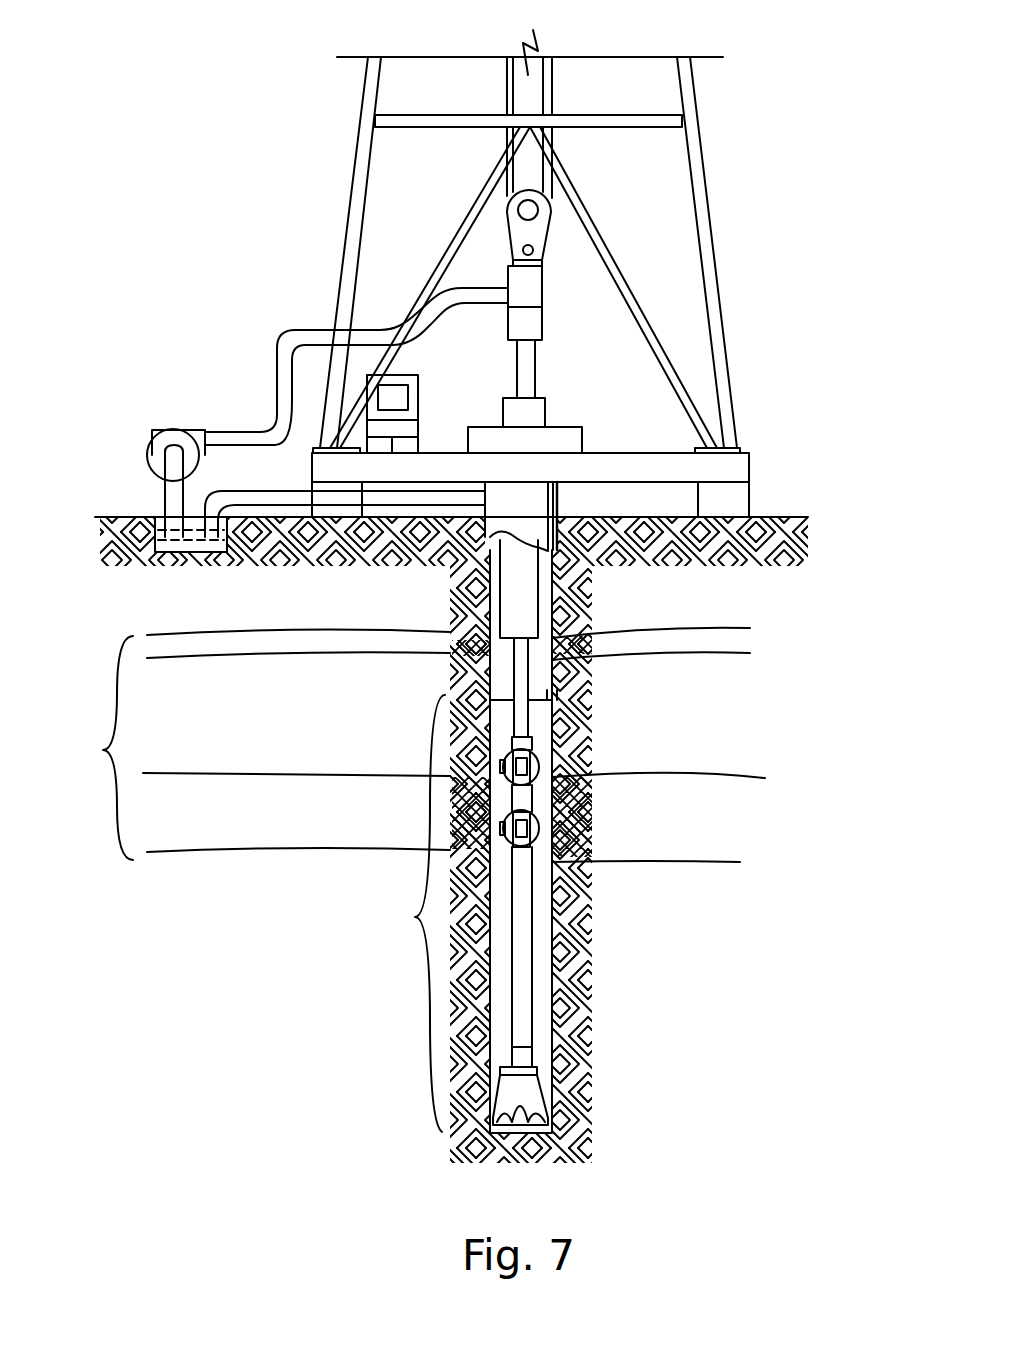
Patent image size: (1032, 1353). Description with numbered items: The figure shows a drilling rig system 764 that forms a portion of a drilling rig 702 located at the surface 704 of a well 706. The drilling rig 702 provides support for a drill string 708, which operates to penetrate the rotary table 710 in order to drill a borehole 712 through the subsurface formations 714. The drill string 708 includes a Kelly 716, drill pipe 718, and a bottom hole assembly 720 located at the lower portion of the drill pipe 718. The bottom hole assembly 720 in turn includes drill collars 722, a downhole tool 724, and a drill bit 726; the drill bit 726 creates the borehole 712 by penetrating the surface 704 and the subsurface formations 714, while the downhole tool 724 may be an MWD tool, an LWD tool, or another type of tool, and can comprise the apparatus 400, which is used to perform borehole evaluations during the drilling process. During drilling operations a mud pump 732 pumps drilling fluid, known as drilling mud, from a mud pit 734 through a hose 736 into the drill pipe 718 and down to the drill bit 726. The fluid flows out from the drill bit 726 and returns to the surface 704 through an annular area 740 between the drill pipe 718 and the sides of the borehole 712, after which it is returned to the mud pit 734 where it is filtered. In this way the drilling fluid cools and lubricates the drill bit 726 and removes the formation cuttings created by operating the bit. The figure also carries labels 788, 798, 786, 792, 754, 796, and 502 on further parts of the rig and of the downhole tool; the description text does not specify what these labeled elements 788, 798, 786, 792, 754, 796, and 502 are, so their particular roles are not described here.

The drilling rig system 764 is at (228, 142).
The drilling rig 702 is at (720, 252).
The derrick leg 788 is at (698, 143).
The Kelly 716 is at (537, 363).
The rotary bushing 798 is at (546, 412).
The rotary table 710 is at (487, 426).
The rig floor platform 786 is at (749, 453).
The surface 704 is at (800, 517).
The well 706 is at (572, 502).
The control unit arrow 792 is at (417, 366).
The controller housing 754 is at (420, 392).
The controller 796 is at (410, 400).
The hose 736 is at (290, 330).
The mud pump 732 is at (180, 430).
The mud pit 734 is at (185, 556).
The drill collars 722 is at (540, 598).
The drill pipe 718 is at (527, 676).
The annular area 740 is at (535, 742).
The downhole tool 724 is at (503, 745).
The sensor 502 is at (533, 762).
The apparatus 400 is at (540, 775).
The drill string 708 is at (542, 920).
The borehole 712 is at (540, 993).
The drill bit 726 is at (528, 1087).
The bottom hole assembly 720 is at (406, 913).
The subsurface formations 714 is at (410, 745).